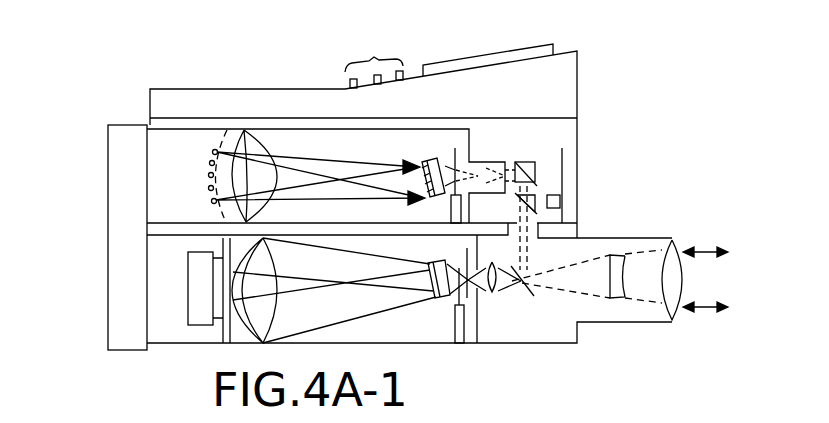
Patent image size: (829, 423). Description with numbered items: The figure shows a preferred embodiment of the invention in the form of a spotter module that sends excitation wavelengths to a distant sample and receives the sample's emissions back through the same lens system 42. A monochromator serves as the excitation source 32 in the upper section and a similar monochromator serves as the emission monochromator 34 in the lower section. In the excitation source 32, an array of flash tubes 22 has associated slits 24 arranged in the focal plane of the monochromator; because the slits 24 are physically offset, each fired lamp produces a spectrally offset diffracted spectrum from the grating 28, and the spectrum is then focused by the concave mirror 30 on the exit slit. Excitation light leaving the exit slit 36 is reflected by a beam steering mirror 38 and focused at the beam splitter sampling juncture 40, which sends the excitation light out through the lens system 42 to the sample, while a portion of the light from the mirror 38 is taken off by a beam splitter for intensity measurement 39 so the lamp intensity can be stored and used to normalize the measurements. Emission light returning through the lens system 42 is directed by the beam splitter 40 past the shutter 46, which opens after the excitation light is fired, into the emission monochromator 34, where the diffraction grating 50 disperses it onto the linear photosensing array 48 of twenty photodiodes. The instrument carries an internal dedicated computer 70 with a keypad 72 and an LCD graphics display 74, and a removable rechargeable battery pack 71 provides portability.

The array of flash tubes 22 is at (208, 175).
The slits 24 is at (235, 133).
The grating 28 is at (426, 160).
The concave mirror 30 is at (281, 141).
The excitation source 32 is at (86, 131).
The emission monochromator 34 is at (86, 253).
The exit slit 36 is at (463, 160).
The beam steering mirror 38 is at (527, 161).
The beam splitter for intensity measurement 39 is at (560, 197).
The beam splitter sampling juncture 40 is at (519, 287).
The lens system 42 is at (655, 287).
The shutter 46 is at (459, 344).
The photosensing array 48 is at (197, 293).
The diffraction grating 50 is at (437, 299).
The computer 70 is at (495, 101).
The removable rechargeable battery pack 71 is at (143, 250).
The keypad 72 is at (374, 61).
The LCD graphics display 74 is at (510, 49).